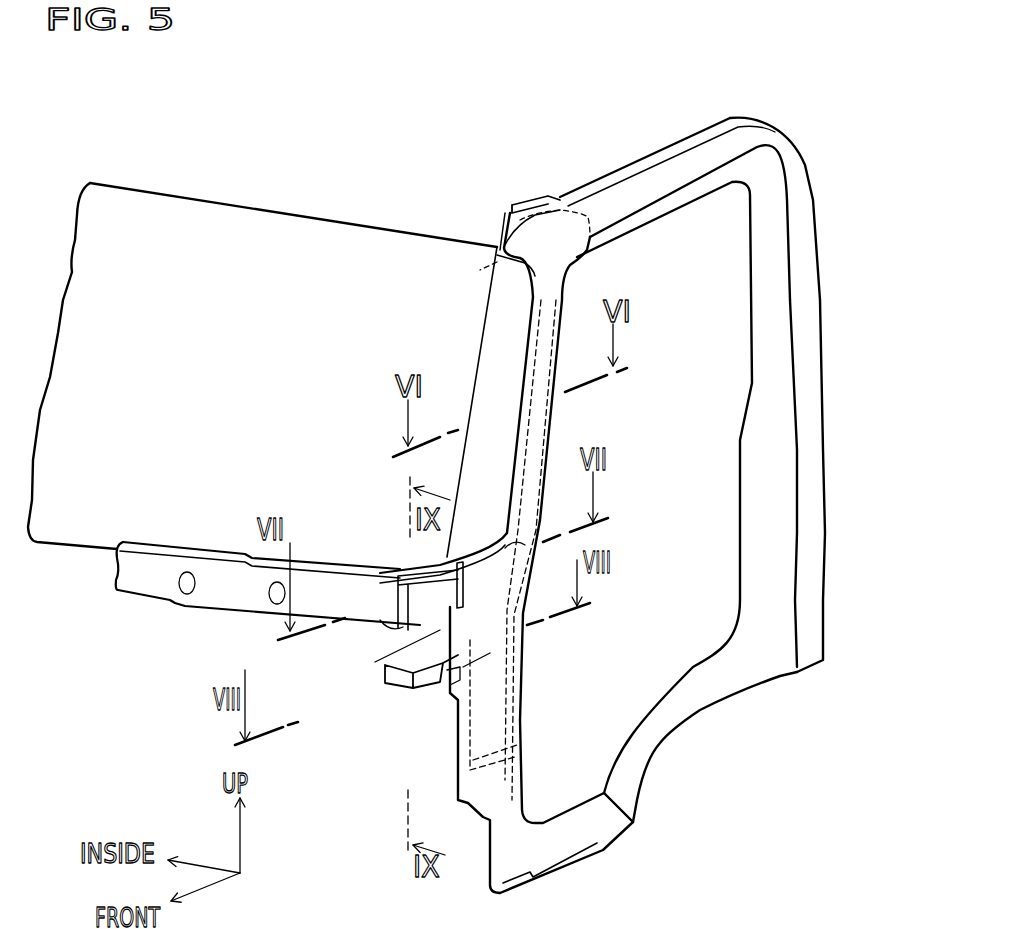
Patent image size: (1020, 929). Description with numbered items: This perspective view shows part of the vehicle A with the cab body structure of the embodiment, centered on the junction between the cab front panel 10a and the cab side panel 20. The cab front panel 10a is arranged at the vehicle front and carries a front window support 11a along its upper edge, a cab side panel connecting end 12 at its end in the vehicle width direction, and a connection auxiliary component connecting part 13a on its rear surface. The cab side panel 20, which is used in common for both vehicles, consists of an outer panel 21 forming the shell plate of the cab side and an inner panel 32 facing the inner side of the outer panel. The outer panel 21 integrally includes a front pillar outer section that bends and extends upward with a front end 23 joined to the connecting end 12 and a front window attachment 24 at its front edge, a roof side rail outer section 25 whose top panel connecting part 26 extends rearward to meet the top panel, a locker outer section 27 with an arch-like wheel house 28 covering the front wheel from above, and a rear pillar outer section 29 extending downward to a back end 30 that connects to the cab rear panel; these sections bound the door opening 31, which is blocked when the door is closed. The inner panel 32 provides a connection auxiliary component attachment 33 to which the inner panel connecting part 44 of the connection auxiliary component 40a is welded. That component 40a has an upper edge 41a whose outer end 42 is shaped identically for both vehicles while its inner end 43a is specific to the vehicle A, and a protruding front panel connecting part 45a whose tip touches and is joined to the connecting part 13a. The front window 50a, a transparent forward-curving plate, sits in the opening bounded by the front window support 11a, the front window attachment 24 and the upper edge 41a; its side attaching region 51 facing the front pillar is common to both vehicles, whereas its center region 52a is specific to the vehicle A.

The front window 50a is at (207, 194).
The center region 52a is at (314, 218).
The front window support 11a is at (132, 443).
The cab front panel 10a is at (181, 615).
The inner end 43a is at (413, 567).
The connection auxiliary component connecting part 13a is at (427, 572).
The upper edge 41a is at (437, 567).
The outer end 42 is at (512, 537).
The cab side panel connecting end 12 is at (410, 626).
The connection auxiliary component 40a is at (385, 681).
The front panel connecting part 45a is at (393, 684).
The connection auxiliary component attachment 33 is at (450, 677).
The front end 23 is at (455, 700).
The inner panel connecting part 44 is at (480, 760).
The cab side panel 20 is at (596, 176).
The front window attachment 24 is at (478, 247).
The inner panel 32 is at (520, 199).
The side attaching region 51 is at (498, 294).
The top panel connecting part 26 is at (687, 137).
The roof side rail outer section 25 is at (668, 162).
The outer panel 21 is at (710, 116).
The door opening 31 is at (733, 652).
The rear pillar outer section 29 is at (811, 598).
The back end 30 is at (826, 638).
The wheel house 28 is at (660, 746).
The locker outer section 27 is at (613, 828).
The vehicle A is at (718, 755).